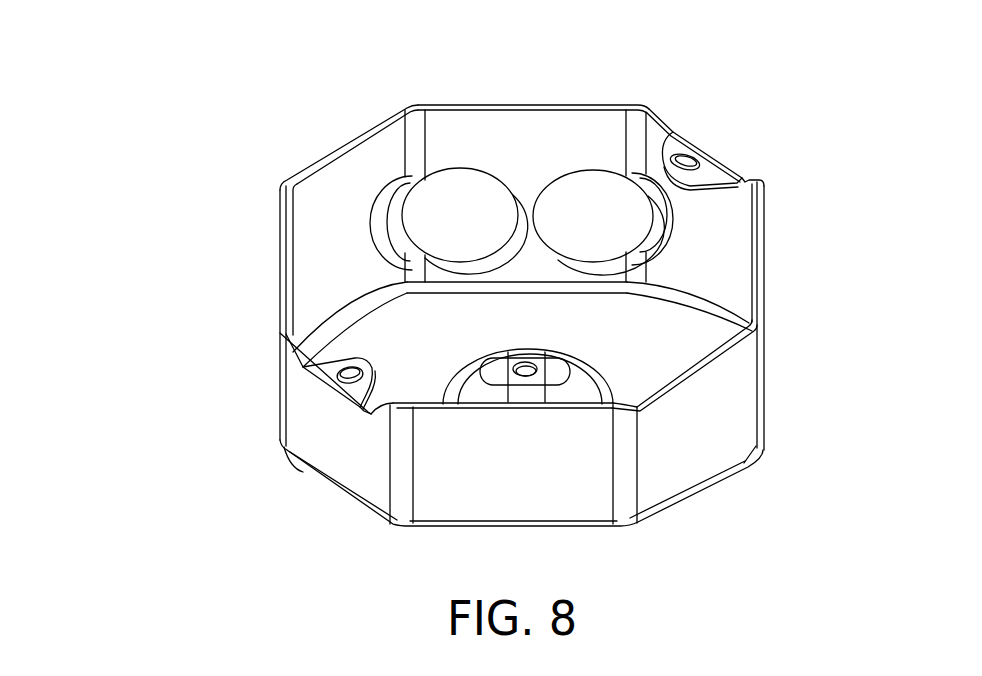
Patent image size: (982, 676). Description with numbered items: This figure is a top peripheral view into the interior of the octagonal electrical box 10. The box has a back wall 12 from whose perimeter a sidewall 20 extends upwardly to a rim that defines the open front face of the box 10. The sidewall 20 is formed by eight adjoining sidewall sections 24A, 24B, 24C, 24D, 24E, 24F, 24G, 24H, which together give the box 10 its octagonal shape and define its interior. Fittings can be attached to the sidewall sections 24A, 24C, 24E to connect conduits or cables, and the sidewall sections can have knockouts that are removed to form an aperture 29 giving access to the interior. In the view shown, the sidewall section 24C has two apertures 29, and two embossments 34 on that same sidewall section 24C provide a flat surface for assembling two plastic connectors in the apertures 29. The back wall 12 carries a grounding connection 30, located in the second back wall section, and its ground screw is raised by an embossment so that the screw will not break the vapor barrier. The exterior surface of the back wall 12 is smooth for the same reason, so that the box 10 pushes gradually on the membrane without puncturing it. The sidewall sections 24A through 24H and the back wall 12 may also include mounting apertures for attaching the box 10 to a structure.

The octagonal electrical box 10 is at (175, 302).
The back wall 12 is at (670, 343).
The sidewall 20 is at (763, 400).
The sidewall section 24A is at (279, 253).
The sidewall section 24B is at (360, 152).
The sidewall section 24C is at (532, 142).
The sidewall section 24D is at (720, 203).
The sidewall section 24E is at (763, 285).
The sidewall section 24F is at (705, 433).
The sidewall section 24G is at (562, 478).
The sidewall section 24H is at (350, 452).
The aperture 29 is at (463, 183).
The grounding connection 30 is at (515, 362).
The embossment 34 is at (380, 217).